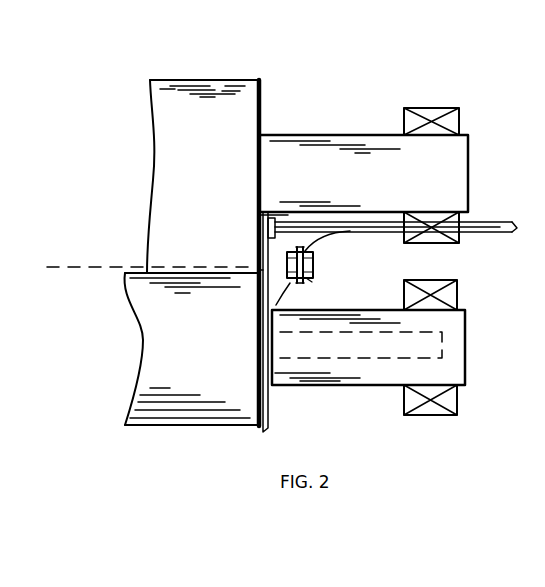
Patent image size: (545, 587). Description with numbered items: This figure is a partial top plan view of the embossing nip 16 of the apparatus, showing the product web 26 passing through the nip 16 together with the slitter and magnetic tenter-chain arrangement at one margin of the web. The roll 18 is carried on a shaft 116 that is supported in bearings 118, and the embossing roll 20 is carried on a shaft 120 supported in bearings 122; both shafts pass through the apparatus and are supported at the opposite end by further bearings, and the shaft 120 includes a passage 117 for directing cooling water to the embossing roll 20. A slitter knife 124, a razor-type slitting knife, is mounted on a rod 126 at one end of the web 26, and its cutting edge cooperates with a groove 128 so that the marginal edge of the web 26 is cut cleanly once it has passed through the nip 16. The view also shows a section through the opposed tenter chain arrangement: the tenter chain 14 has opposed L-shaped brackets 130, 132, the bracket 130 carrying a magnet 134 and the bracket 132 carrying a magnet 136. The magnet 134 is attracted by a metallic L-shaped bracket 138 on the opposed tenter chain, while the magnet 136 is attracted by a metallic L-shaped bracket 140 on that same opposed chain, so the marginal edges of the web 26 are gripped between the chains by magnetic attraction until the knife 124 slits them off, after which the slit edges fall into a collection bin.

The tenter chain 14 is at (299, 250).
The nip 16 is at (123, 288).
The roll 18 is at (210, 108).
The embossing roll 20 is at (159, 342).
The product web 26 is at (68, 268).
The shaft 116 is at (461, 152).
The passage 117 is at (376, 357).
The bearings 118 is at (434, 218).
The shaft 120 is at (451, 367).
The bearings 122 is at (440, 280).
The slitter knife 124 is at (266, 235).
The rod 126 is at (488, 223).
The groove 128 is at (262, 431).
The L-shaped bracket 130 is at (307, 250).
The L-shaped bracket 132 is at (295, 250).
The magnet 134 is at (318, 270).
The magnet 136 is at (260, 274).
The metallic L-shaped bracket 138 is at (310, 281).
The metallic L-shaped bracket 140 is at (290, 283).